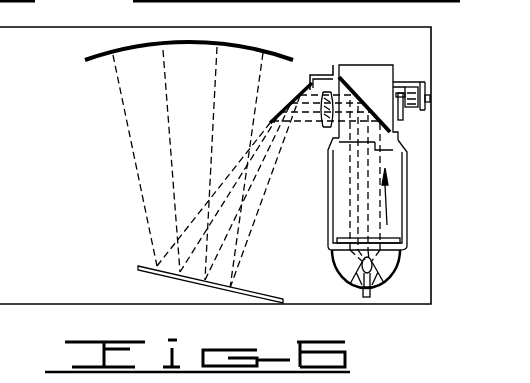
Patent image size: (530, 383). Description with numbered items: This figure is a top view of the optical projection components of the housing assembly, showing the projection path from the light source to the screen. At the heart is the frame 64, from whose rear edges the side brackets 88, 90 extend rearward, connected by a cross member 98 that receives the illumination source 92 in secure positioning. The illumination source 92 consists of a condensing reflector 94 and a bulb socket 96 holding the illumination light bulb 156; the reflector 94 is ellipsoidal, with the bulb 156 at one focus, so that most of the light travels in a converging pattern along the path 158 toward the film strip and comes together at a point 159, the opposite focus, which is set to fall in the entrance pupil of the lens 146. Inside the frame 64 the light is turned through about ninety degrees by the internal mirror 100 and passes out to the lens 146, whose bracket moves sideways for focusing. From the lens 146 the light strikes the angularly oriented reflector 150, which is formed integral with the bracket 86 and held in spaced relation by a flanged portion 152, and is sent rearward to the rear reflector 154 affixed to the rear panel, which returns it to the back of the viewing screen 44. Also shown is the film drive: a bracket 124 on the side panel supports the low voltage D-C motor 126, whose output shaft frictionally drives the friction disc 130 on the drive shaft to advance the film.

The curved screen 44 is at (178, 40).
The frame 64 is at (362, 65).
The bracket 86 is at (318, 73).
The side bracket 88 is at (407, 175).
The side bracket 90 is at (328, 190).
The illumination source 92 is at (337, 264).
The reflector 94 is at (397, 263).
The bulb socket 96 is at (363, 293).
The cross member 98 is at (400, 247).
The internal mirror 100 is at (351, 89).
The bracket 124 is at (418, 80).
The film strip drive motor 126 is at (420, 92).
The friction disc 130 is at (405, 117).
The lens 146 is at (323, 128).
The reflector 150 is at (294, 94).
The flanged portion 152 is at (308, 74).
The rear reflector 154 is at (167, 279).
The illumination light bulb 156 is at (395, 273).
The path 158 is at (387, 195).
The point 159 is at (375, 150).